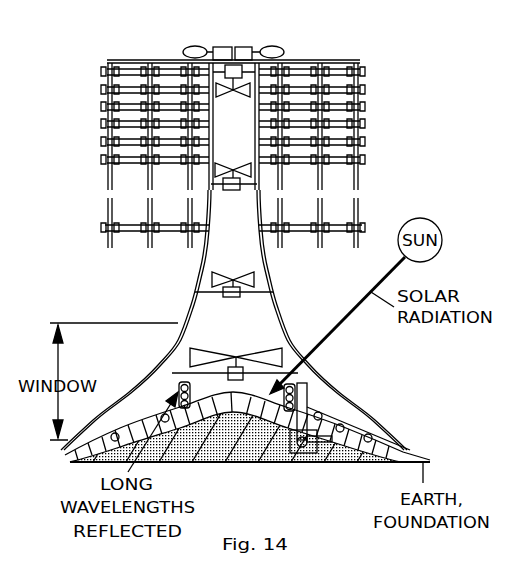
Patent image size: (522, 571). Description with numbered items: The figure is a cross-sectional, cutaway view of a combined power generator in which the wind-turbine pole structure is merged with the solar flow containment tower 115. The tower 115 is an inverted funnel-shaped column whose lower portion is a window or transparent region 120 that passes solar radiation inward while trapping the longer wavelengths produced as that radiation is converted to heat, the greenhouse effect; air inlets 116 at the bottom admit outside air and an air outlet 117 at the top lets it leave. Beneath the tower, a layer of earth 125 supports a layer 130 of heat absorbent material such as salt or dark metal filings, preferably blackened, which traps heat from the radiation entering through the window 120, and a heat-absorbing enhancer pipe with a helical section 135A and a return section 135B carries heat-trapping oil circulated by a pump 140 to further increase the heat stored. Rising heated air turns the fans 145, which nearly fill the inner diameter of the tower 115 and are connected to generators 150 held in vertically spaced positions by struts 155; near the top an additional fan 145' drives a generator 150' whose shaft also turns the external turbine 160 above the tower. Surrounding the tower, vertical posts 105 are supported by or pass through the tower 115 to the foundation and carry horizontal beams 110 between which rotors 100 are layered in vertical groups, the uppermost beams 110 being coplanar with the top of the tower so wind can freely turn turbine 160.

The rotors or turbines 100 is at (362, 128).
The vertical posts, poles or pylons 105 is at (360, 179).
The horizontal beams 110 is at (359, 82).
The flow containment tower 115 is at (187, 303).
The air inlets 116 is at (427, 450).
The air outlet 117 is at (281, 52).
The window or transparent region 120 is at (356, 405).
The layer of earth 125 is at (340, 463).
The layer of heat absorbent material 130 is at (373, 437).
The helical section of heat-absorbing enhancer pipe 135A is at (297, 398).
The return section of heat-absorbing enhancer pipe 135B is at (343, 419).
The pump 140 is at (305, 453).
The fans or turbines 145 is at (236, 252).
The additional fan 145' is at (232, 102).
The generators 150 is at (239, 337).
The generator 150' is at (253, 52).
The struts 155 is at (198, 479).
The external fan or turbine 160 is at (198, 46).